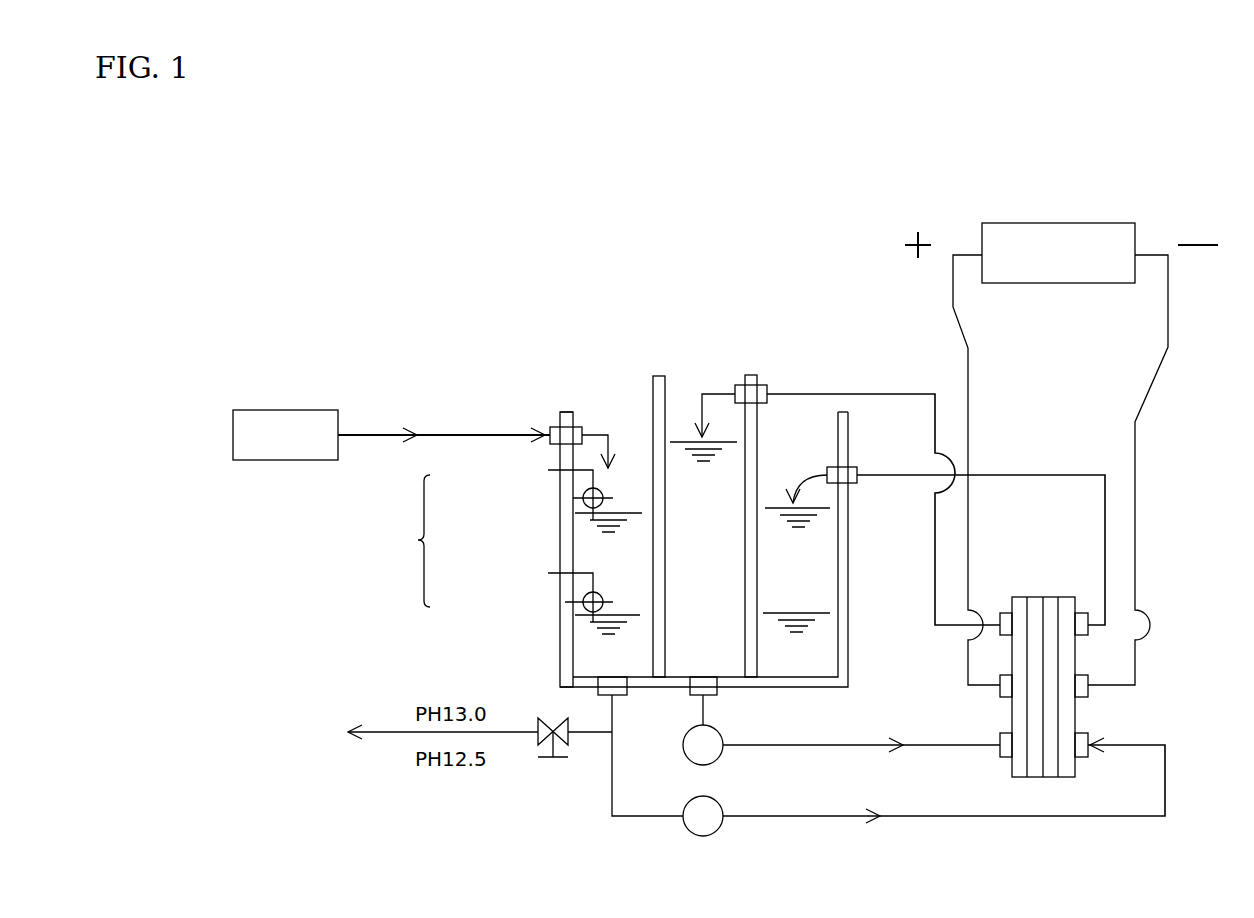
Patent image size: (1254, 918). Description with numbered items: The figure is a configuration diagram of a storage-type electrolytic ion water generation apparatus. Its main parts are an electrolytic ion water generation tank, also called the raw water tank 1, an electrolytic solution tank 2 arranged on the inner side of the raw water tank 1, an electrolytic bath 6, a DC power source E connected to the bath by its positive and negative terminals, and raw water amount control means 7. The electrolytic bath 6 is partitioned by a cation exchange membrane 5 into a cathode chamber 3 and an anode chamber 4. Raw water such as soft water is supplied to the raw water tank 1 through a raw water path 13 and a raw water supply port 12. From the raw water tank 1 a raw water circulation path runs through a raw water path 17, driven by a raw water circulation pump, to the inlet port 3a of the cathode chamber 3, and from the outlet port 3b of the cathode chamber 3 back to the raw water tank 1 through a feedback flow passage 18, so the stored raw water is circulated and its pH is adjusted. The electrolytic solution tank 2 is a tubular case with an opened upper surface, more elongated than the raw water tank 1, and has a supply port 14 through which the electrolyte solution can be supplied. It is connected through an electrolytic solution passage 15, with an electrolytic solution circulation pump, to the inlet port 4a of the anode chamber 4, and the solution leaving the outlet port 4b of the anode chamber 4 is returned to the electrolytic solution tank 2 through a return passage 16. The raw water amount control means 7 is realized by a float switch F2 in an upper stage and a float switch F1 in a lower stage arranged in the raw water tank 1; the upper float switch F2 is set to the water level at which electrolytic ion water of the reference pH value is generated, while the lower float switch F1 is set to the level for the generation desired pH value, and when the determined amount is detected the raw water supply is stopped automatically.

The electrolytic ion water generation tank 1 is at (580, 555).
The electrolytic solution tank 2 is at (680, 477).
The cathode chamber 3 is at (1067, 597).
The inlet port 3a is at (1085, 733).
The outlet port 3b is at (1113, 625).
The anode chamber 4 is at (1017, 597).
The inlet port 4a is at (1000, 755).
The outlet port 4b is at (1000, 635).
The cation exchange membrane 5 is at (1043, 597).
The electrolytic bath 6 is at (1049, 637).
The raw water amount control means 7 is at (403, 541).
The raw water supply port 12 is at (558, 425).
The raw water path 13 is at (458, 432).
The supply port 14 is at (758, 385).
The electrolytic solution passage 15 is at (820, 743).
The return passage 16 is at (862, 394).
The raw water path 17 is at (927, 817).
The feedback flow passage 18 is at (1020, 473).
The DC power source E is at (1073, 223).
The float switch in the lower stage F1 is at (550, 598).
The float switch in the upper stage F2 is at (582, 500).